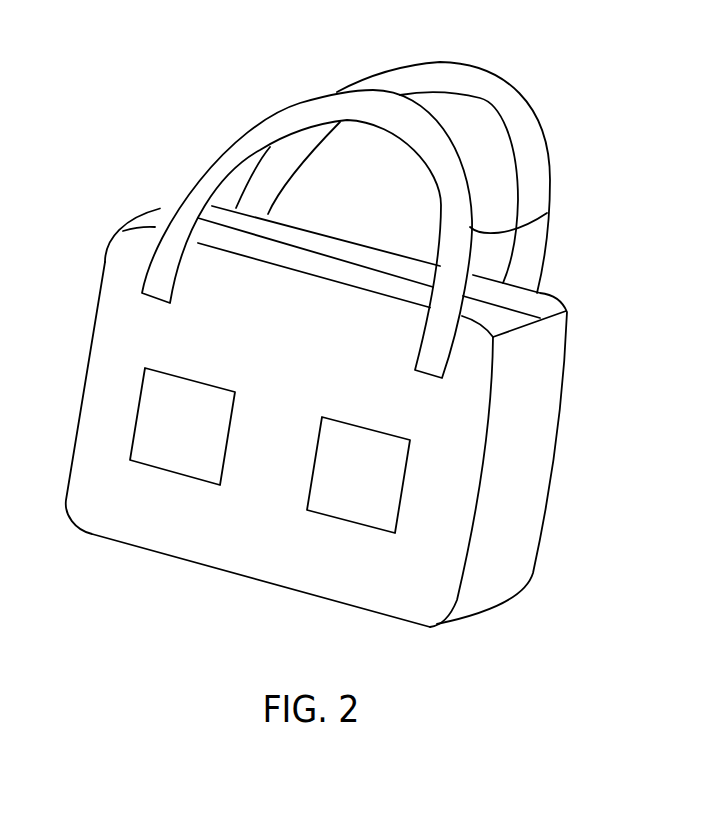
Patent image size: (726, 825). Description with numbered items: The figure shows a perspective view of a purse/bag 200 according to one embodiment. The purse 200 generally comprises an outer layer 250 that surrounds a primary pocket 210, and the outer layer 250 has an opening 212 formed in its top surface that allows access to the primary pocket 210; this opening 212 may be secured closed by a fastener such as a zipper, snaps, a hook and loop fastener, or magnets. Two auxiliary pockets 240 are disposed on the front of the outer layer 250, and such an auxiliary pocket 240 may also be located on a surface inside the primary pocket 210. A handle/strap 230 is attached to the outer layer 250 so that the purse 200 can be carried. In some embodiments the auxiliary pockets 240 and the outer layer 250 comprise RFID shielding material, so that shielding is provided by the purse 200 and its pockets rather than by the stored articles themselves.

The purse/bag 200 is at (334, 345).
The primary pocket 210 is at (389, 256).
The opening 212 is at (207, 245).
The handle/strap 230 is at (530, 207).
The auxiliary pocket 240 is at (172, 460).
The outer layer 250 is at (127, 330).